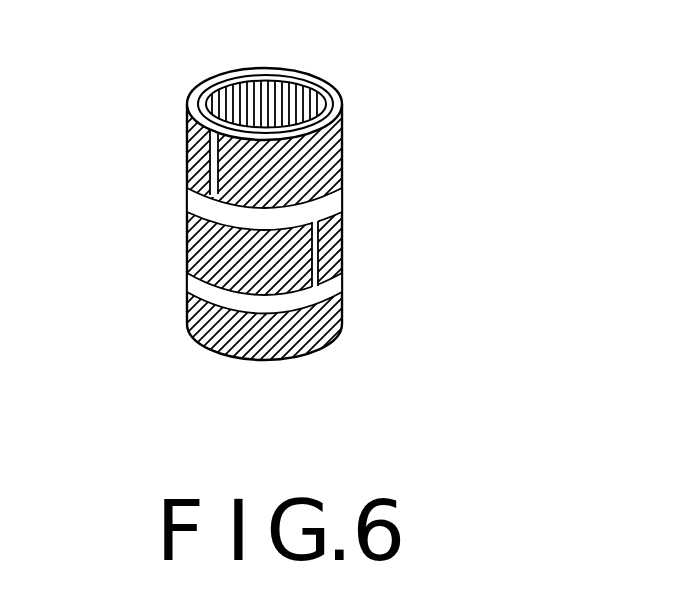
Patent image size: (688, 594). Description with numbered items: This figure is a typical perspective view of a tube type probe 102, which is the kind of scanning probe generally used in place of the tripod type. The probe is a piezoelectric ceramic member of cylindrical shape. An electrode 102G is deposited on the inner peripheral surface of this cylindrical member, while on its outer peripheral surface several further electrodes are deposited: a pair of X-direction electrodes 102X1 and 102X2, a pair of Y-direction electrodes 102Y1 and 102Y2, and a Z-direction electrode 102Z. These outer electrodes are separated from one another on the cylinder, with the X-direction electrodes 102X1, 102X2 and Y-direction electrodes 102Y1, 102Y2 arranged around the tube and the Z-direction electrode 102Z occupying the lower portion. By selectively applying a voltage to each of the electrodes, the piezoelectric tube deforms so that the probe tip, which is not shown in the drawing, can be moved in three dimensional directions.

The tube type probe 102 is at (343, 123).
The electrode 102G is at (274, 87).
The Y-direction electrode 102Y1 is at (340, 164).
The Y-direction electrode 102Y2 is at (187, 147).
The X-direction electrode 102X1 is at (340, 233).
The X-direction electrode 102X2 is at (187, 232).
The Z-direction electrode 102Z is at (340, 307).